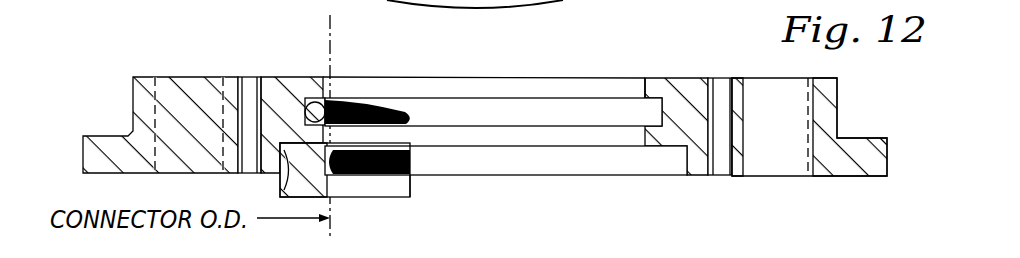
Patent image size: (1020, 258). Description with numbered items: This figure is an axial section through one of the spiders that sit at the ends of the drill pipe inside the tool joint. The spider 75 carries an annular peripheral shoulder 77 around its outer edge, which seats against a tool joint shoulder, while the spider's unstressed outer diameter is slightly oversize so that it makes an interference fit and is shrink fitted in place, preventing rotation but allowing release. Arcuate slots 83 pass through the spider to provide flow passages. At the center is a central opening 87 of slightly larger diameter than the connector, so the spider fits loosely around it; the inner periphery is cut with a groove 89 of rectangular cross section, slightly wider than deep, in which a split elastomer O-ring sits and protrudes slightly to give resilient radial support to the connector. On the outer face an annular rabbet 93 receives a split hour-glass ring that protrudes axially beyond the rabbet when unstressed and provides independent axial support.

The spider 75 is at (668, 74).
The annular peripheral shoulder 77 is at (99, 135).
The arcuate slot 83 is at (793, 158).
The central opening 87 is at (643, 92).
The groove 89 is at (578, 112).
The annular rabbet 93 is at (677, 158).